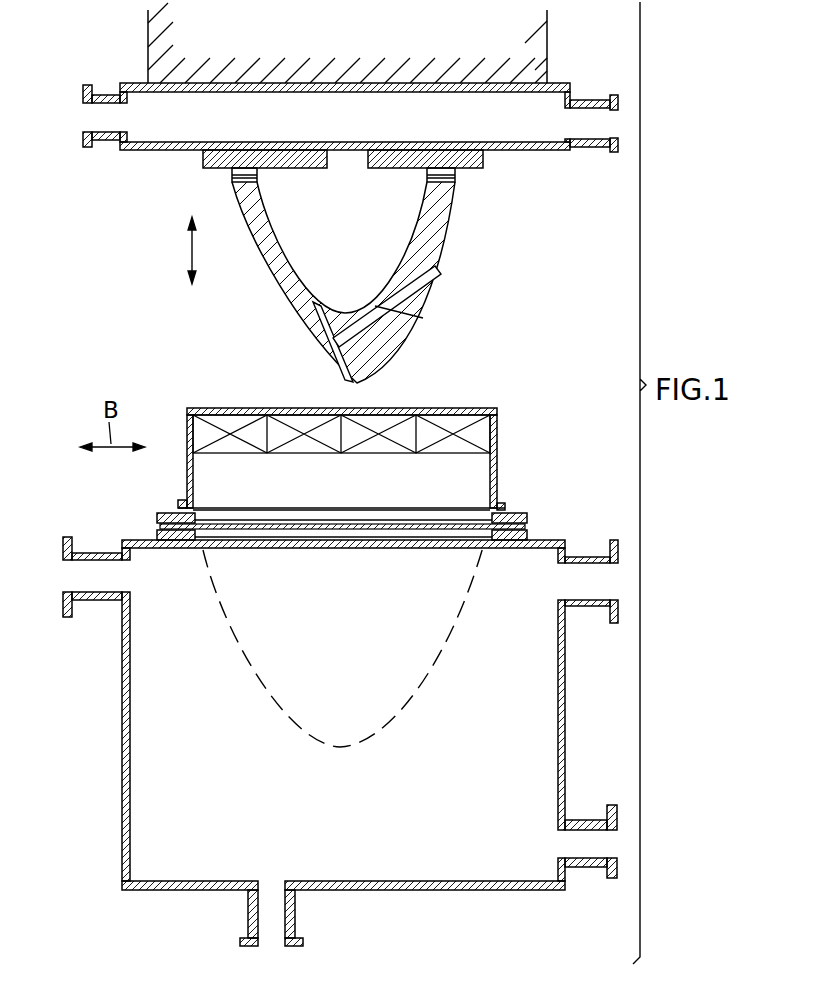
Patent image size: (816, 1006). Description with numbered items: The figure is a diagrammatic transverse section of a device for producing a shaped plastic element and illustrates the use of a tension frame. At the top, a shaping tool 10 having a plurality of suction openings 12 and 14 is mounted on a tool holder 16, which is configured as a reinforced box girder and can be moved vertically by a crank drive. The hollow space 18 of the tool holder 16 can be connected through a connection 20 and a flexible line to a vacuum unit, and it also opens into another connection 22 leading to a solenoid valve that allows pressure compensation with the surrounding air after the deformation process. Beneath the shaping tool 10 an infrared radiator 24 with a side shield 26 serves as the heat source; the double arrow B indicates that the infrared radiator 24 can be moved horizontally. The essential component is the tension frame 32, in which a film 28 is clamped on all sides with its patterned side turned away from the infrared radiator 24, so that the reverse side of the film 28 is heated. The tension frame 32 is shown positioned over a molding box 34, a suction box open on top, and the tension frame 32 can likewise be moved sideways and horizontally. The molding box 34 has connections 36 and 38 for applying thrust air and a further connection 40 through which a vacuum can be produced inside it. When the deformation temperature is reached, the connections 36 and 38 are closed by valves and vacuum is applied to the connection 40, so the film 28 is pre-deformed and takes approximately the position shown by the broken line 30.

The shaping tool 10 is at (357, 325).
The suction opening 12 is at (393, 283).
The suction opening 14 is at (360, 166).
The tool holder 16 is at (497, 34).
The hollow space 18 is at (538, 112).
The connection 20 is at (97, 115).
The connection 22 is at (597, 125).
The infrared radiator 24 is at (480, 440).
The side shield 26 is at (498, 481).
The film 28 is at (307, 532).
The pre-deformed film position 30 is at (383, 732).
The tension frame 32 is at (165, 513).
The molding box 34 is at (535, 730).
The connection 36 is at (100, 572).
The connection 38 is at (275, 921).
The connection 40 is at (595, 848).